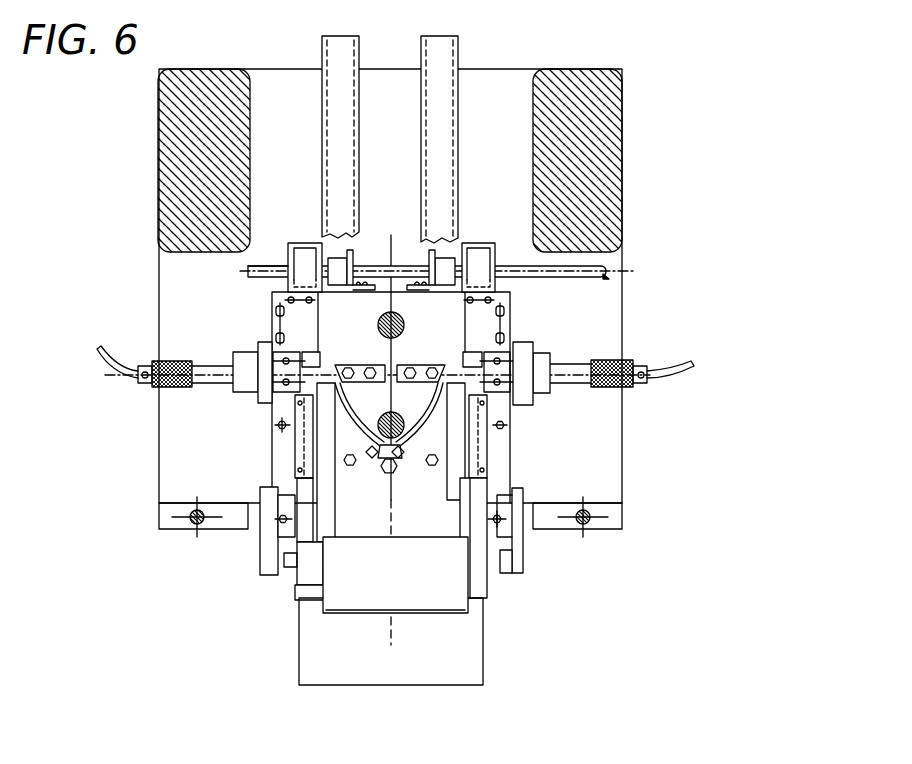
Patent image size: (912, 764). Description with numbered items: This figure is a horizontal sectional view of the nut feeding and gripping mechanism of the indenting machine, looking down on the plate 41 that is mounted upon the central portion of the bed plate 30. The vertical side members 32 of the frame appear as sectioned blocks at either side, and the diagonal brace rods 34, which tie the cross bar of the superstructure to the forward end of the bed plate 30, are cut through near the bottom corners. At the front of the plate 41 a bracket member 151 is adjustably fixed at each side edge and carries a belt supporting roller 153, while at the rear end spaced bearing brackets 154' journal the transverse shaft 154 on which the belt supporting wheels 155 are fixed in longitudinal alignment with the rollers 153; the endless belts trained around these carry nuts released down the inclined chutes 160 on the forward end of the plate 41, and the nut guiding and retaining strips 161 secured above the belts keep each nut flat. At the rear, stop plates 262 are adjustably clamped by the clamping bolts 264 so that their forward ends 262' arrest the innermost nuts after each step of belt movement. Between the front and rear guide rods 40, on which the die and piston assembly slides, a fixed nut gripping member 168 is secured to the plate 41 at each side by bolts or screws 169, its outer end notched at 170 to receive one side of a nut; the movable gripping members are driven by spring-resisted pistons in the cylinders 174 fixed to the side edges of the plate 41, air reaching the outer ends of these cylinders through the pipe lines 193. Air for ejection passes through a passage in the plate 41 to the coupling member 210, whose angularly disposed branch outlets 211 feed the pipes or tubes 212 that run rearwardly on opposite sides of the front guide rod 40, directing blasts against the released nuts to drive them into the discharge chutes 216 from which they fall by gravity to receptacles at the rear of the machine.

The bed plate 30 is at (622, 302).
The vertical side members 32 is at (214, 250).
The discharge chutes 216 is at (421, 149).
The transverse shaft 154 is at (438, 287).
The bearing brackets 154' is at (391, 259).
The belt supporting wheels 155 is at (300, 242).
The clamping bolts 264 is at (288, 266).
The stop plates 262 is at (366, 317).
The forward ends of stop plates 262' is at (335, 354).
The notches 170 is at (450, 368).
The front and rear rods 40 is at (379, 326).
The cylinders 174 is at (210, 386).
The pipe lines 193 is at (106, 354).
The bolts or screws 169 is at (370, 363).
The nut gripping member 168 is at (418, 363).
The pipes or tubes 212 is at (347, 408).
The coupling member 210 is at (395, 484).
The branch outlets 211 is at (379, 452).
The nut guiding and retaining strips 161 is at (293, 442).
The inclined chutes 160 is at (473, 576).
The diagonal brace rods 34 is at (191, 524).
The bracket member 151 is at (260, 546).
The belt supporting roller 153 is at (307, 560).
The plate 41 is at (417, 528).